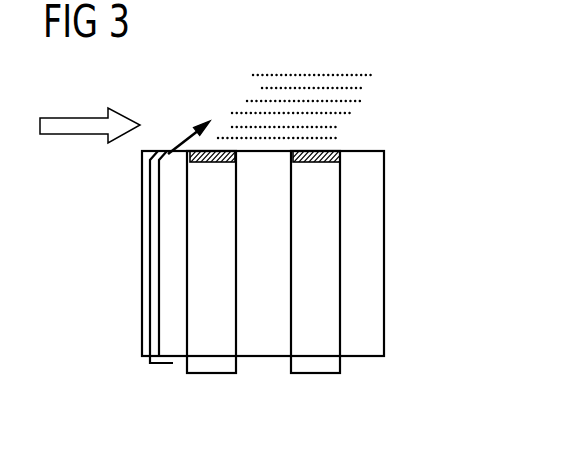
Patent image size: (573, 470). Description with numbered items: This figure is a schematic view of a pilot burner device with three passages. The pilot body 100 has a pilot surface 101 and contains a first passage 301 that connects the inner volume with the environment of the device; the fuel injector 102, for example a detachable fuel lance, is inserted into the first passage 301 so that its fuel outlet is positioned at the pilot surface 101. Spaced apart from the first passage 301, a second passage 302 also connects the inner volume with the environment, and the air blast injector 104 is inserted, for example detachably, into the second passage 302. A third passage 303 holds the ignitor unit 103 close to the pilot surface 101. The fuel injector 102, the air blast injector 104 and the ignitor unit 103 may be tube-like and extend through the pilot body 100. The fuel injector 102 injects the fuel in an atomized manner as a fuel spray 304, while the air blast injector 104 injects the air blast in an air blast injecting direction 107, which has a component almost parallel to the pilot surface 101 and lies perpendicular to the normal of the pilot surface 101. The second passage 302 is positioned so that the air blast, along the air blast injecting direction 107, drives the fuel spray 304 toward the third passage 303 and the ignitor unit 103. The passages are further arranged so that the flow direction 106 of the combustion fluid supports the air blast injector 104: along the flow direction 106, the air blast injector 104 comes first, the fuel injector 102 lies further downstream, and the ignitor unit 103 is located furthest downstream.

The pilot body 100 is at (289, 260).
The pilot surface 101 is at (368, 150).
The fuel injector 102 is at (210, 163).
The ignitor unit 103 is at (315, 163).
The air blast injector 104 is at (172, 150).
The flow direction 106 is at (77, 126).
The air blast injecting direction 107 is at (185, 141).
The first passage 301 is at (213, 363).
The second passage 302 is at (152, 305).
The third passage 303 is at (313, 363).
The fuel spray 304 is at (363, 100).